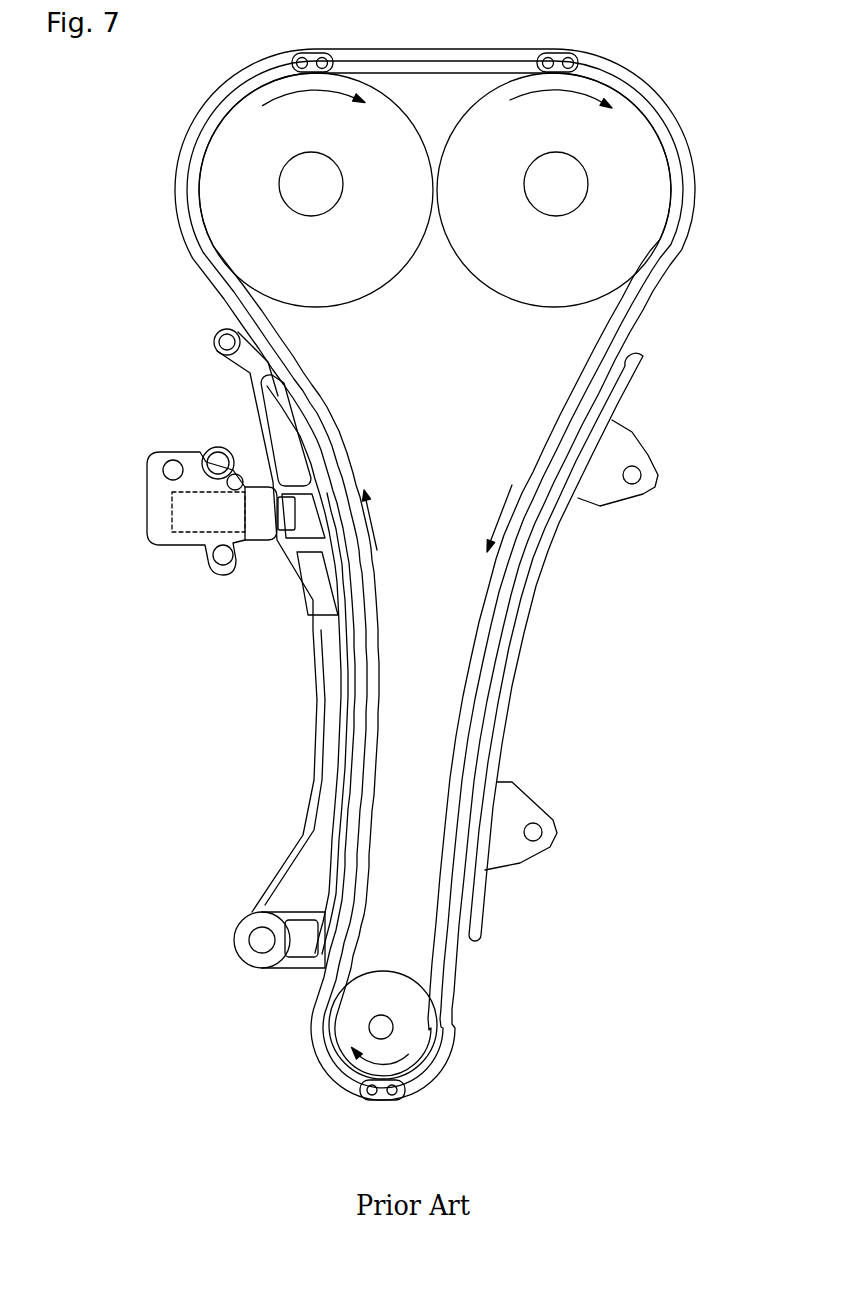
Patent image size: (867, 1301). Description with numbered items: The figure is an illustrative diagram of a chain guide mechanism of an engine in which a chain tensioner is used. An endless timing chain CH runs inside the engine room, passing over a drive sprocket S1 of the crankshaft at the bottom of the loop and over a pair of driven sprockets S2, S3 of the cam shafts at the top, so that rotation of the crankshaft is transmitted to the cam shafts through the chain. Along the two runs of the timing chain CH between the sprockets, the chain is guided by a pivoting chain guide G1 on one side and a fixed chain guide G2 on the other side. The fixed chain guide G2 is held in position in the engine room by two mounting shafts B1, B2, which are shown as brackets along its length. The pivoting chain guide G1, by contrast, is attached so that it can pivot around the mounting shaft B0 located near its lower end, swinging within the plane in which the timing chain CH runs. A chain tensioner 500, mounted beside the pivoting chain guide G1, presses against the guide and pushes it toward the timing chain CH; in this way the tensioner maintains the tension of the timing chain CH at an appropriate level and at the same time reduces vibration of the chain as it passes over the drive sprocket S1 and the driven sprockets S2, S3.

The timing chain CH is at (640, 300).
The drive sprocket S1 is at (415, 1030).
The driven sprocket S2 is at (226, 180).
The driven sprocket S3 is at (625, 168).
The pivoting chain guide G1 is at (322, 833).
The fixed chain guide G2 is at (510, 690).
The chain tensioner 500 is at (173, 457).
The mounting shaft B0 is at (249, 940).
The mounting shaft B1 is at (645, 477).
The mounting shaft B2 is at (545, 832).